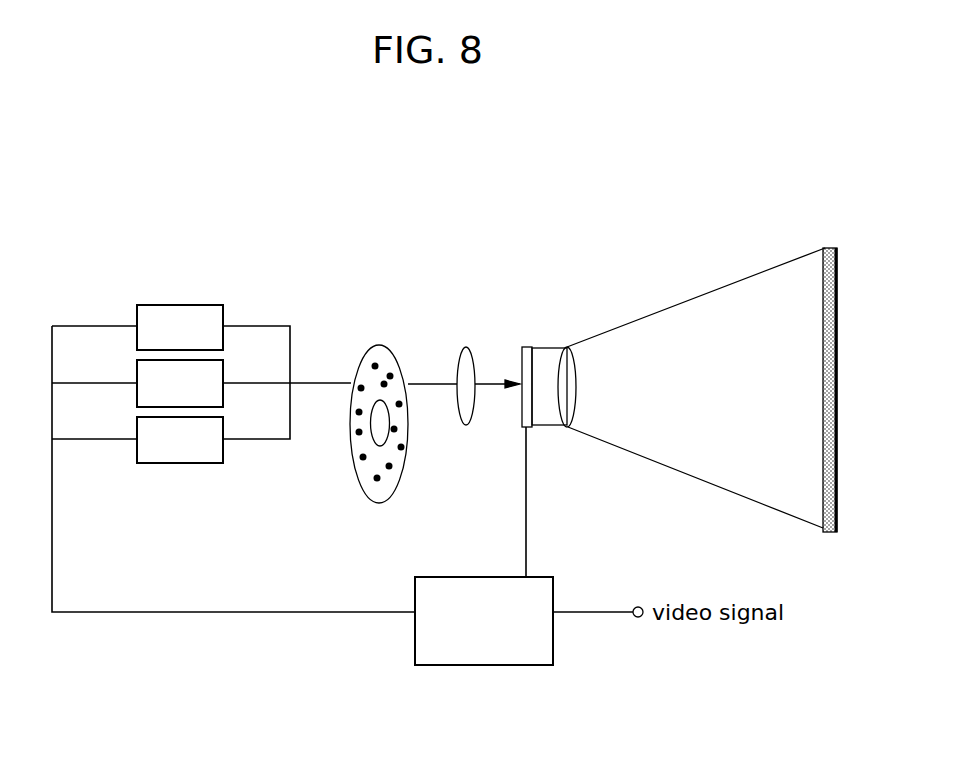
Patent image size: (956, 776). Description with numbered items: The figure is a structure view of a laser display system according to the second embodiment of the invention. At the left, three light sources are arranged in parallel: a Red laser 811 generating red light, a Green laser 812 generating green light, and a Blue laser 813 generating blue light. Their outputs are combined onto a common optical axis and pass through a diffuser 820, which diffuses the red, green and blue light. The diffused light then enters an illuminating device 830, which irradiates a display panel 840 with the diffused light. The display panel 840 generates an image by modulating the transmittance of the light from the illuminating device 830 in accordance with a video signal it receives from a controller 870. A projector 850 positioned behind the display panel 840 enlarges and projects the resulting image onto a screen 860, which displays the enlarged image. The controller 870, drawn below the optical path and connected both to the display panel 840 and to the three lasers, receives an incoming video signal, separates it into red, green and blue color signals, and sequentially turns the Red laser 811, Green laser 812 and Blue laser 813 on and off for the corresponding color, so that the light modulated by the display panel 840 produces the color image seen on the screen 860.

The Red laser 811 is at (137, 338).
The Green laser 812 is at (137, 395).
The Blue laser 813 is at (137, 450).
The diffuser 820 is at (388, 350).
The illuminating device 830 is at (466, 348).
The display panel 840 is at (525, 347).
The projector 850 is at (565, 410).
The screen 860 is at (838, 286).
The controller 870 is at (437, 582).